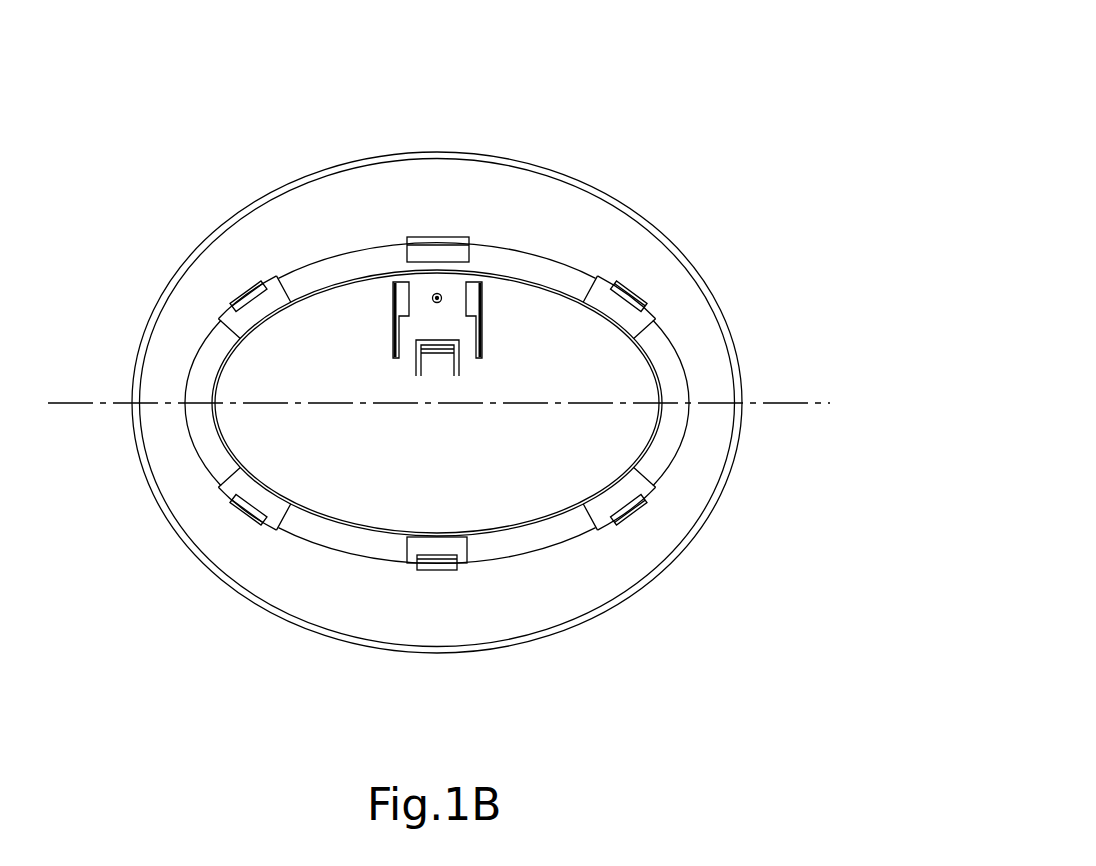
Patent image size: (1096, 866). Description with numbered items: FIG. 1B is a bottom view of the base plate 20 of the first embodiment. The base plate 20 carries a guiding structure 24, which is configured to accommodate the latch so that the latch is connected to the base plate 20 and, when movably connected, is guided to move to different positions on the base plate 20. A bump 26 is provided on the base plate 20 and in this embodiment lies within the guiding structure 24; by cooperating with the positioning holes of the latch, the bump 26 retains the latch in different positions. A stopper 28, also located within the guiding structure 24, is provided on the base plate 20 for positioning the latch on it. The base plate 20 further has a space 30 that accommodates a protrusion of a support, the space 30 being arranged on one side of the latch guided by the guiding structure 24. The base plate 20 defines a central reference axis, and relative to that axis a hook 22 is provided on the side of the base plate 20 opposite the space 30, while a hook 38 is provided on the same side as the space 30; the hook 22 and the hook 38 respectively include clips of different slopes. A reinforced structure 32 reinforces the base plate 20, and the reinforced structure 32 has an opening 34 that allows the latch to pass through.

The base plate 20 is at (618, 128).
The hook 22 is at (625, 511).
The guiding structure 24 is at (403, 300).
The bump 26 is at (441, 293).
The stopper 28 is at (438, 346).
The space 30 is at (443, 237).
The reinforced structure 32 is at (318, 257).
The opening 34 is at (438, 254).
The hook 38 is at (242, 297).